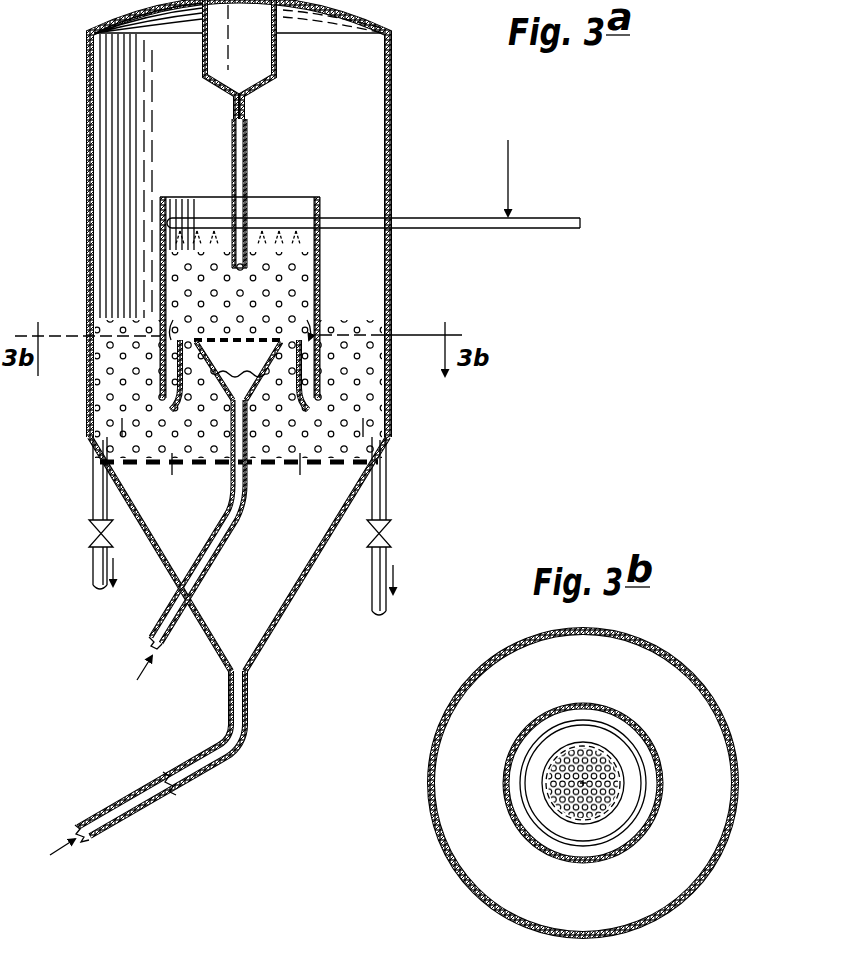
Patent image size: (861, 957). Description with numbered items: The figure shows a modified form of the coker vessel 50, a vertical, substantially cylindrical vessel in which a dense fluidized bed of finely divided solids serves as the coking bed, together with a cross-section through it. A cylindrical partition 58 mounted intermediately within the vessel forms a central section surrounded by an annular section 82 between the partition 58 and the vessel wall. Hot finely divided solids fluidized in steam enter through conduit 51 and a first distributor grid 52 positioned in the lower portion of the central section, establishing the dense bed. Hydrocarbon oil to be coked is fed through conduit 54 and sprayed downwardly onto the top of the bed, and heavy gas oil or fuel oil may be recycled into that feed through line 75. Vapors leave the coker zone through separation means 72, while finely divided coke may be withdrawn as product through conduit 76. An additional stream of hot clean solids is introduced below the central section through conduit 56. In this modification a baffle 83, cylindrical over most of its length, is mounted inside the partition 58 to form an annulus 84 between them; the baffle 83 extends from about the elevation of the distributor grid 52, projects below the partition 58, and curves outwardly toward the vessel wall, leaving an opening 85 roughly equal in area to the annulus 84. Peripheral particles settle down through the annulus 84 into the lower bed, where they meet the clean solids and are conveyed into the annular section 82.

In FIG. 3B, the coker vessel 50 is at (668, 658).
In FIG. 3A, the conduit 51 is at (165, 612).
In FIG. 3A, the first distributor grid 52 is at (236, 343).
In FIG. 3A, the conduit 54 is at (566, 216).
In FIG. 3A, the conduit 56 is at (247, 733).
In FIG. 3A, the cylindrical partition 58 is at (320, 250).
In FIG. 3B, the cylindrical partition 58 is at (535, 723).
In FIG. 3A, the separation means 72 is at (280, 80).
In FIG. 3A, the line 75 is at (506, 168).
In FIG. 3A, the conduit 76 is at (387, 576).
In FIG. 3A, the annular section 82 is at (362, 205).
In FIG. 3B, the annular section 82 is at (594, 682).
In FIG. 3A, the baffle 83 is at (305, 406).
In FIG. 3B, the baffle 83 is at (527, 803).
In FIG. 3A, the annulus 84 is at (176, 381).
In FIG. 3B, the annulus 84 is at (520, 768).
In FIG. 3A, the opening 85 is at (316, 393).